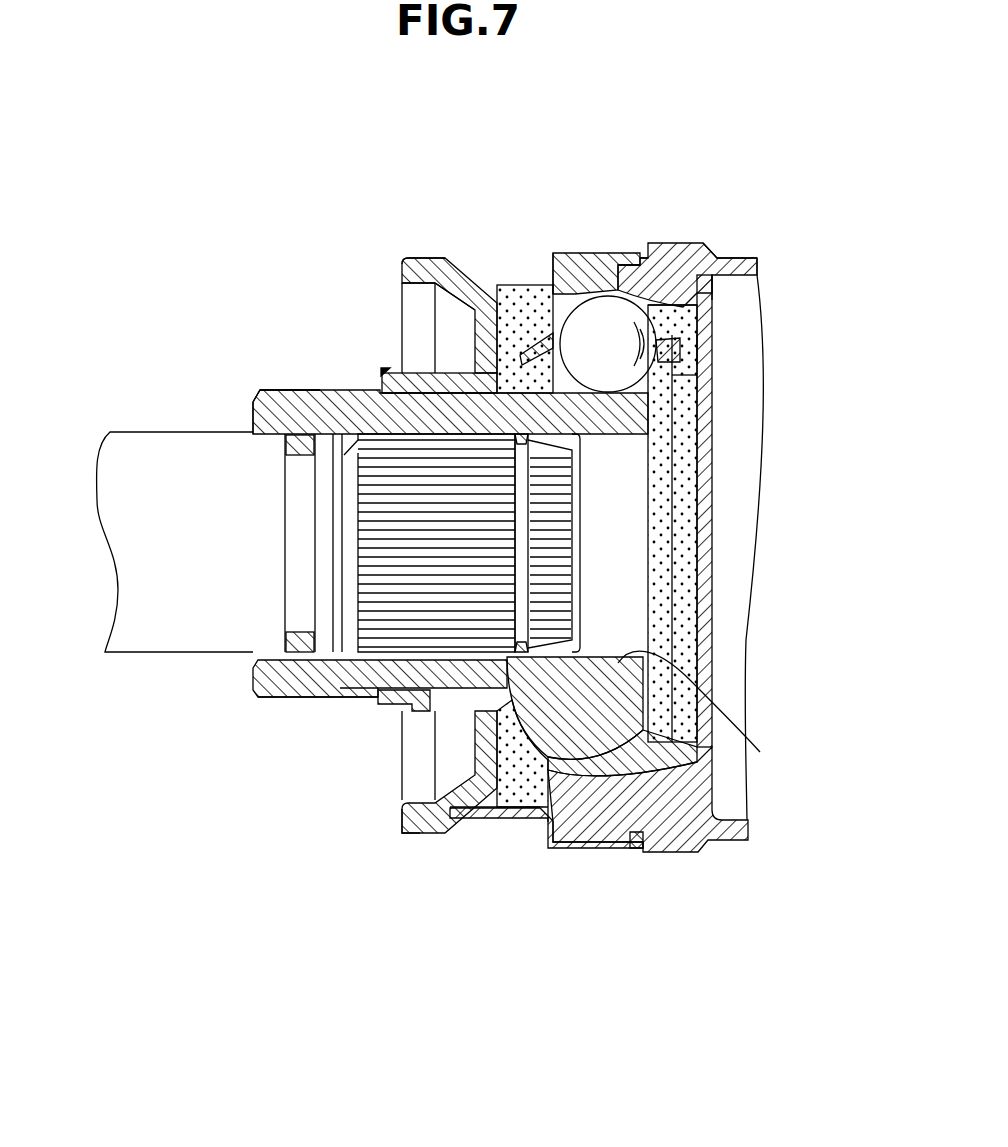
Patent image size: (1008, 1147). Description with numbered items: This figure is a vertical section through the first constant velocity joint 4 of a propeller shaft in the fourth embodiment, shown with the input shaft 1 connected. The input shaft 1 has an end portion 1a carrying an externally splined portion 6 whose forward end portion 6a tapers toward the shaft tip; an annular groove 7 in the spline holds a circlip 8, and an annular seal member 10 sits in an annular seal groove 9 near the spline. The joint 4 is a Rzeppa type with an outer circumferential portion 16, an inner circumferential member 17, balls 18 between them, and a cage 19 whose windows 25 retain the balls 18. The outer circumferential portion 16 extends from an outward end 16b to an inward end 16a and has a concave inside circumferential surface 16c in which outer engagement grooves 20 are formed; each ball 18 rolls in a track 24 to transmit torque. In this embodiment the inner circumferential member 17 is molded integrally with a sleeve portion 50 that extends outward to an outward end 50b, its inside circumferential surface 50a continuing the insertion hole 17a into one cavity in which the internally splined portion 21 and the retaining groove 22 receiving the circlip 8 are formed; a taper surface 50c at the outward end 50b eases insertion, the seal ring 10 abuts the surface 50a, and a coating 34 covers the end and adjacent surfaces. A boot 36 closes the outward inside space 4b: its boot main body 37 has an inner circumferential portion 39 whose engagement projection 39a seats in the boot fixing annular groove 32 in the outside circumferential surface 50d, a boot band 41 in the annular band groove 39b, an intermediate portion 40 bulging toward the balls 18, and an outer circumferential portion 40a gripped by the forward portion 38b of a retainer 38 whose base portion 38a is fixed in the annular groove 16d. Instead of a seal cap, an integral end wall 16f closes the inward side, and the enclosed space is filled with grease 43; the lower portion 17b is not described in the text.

The input shaft 1 is at (130, 428).
The end portion 1a is at (457, 818).
The first constant velocity joint 4 is at (749, 218).
The inside space 4b is at (527, 303).
The externally splined portion 6 is at (487, 553).
The forward end portion 6a is at (547, 617).
The annular groove 7 is at (520, 511).
The circlip 8 is at (530, 440).
The annular seal groove 9 is at (293, 597).
The annular seal member 10 is at (287, 450).
The outer circumferential portion 16 is at (689, 240).
The inward end 16a is at (712, 304).
The outward end 16b is at (570, 267).
The inside circumferential surface 16c is at (720, 254).
The annular groove 16d is at (645, 262).
The end wall 16f is at (700, 569).
The inner circumferential member 17 is at (702, 402).
The insertion hole 17a is at (745, 730).
The cage lower portion 17b is at (580, 783).
The balls 18 is at (600, 310).
The cage 19 is at (700, 352).
The outer engagement grooves 20 is at (664, 317).
The internally splined portion 21 is at (365, 698).
The annular retaining groove 22 is at (498, 803).
The track 24 is at (680, 386).
The windows 25 is at (567, 277).
The boot fixing annular groove 32 is at (390, 722).
The coating 34 is at (293, 390).
The boot 36 is at (402, 250).
The boot main body 37 is at (385, 364).
The retainer 38 is at (551, 853).
The base portion 38a is at (634, 848).
The forward portion 38b is at (402, 838).
The inner circumferential portion 39 is at (383, 368).
The engagement projection 39a is at (383, 418).
The annular band groove 39b is at (438, 293).
The intermediate portion 40 is at (495, 337).
The outer circumferential portion 40a is at (413, 358).
The boot band 41 is at (420, 827).
The grease 43 is at (537, 367).
The sleeve portion 50 is at (328, 400).
The inside circumferential surface 50a is at (310, 700).
The outward end 50b is at (258, 398).
The taper surface 50c is at (253, 436).
The outside circumferential surface 50d is at (270, 390).